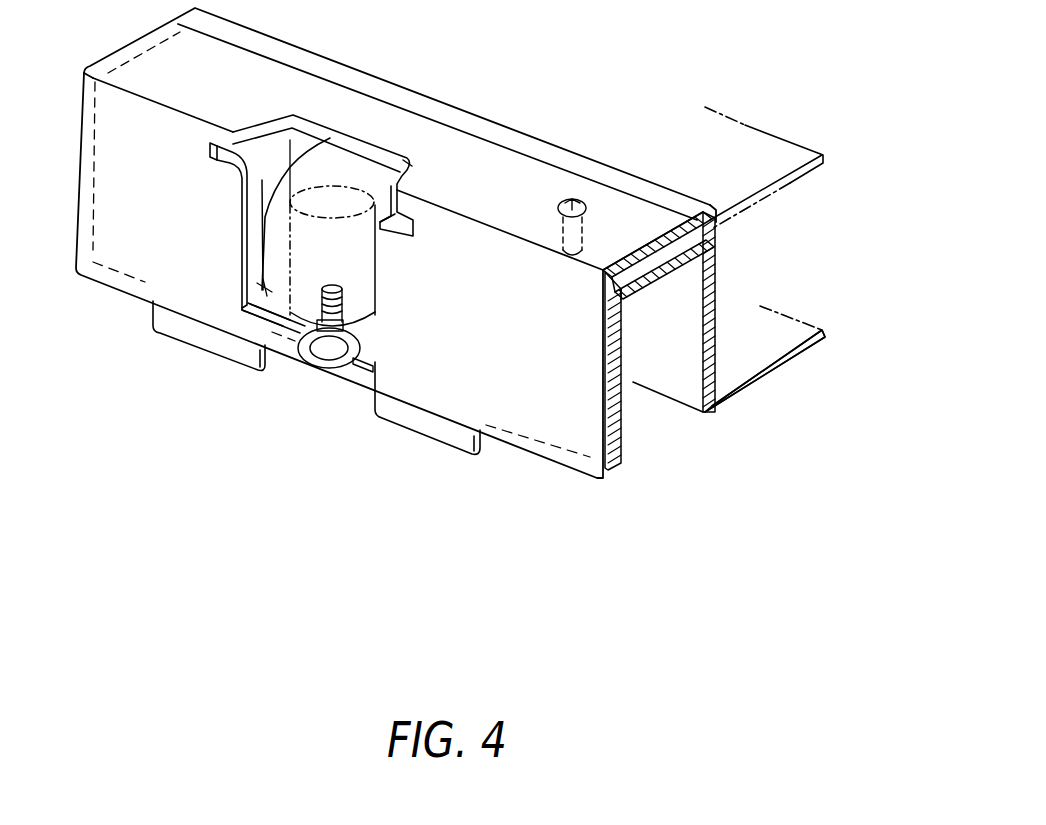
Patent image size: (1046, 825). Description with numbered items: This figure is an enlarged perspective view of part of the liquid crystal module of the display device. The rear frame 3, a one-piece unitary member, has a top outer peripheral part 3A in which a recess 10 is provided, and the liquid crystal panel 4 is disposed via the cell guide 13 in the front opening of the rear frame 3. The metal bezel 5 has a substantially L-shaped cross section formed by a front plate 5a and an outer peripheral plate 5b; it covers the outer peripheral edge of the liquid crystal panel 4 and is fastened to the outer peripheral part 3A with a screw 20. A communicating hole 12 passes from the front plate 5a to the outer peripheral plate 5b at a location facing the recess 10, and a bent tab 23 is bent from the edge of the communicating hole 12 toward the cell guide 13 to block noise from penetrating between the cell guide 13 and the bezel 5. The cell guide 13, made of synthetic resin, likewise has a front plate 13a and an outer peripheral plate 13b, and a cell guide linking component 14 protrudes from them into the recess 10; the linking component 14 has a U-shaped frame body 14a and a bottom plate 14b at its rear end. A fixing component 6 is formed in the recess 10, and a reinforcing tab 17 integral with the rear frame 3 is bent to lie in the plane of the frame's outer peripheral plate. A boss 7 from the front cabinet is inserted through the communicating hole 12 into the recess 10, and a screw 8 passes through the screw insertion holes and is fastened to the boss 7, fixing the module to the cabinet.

The rear frame 3 is at (729, 397).
The outer peripheral part 3A is at (688, 418).
The liquid crystal panel 4 is at (792, 187).
The bezel 5 is at (603, 156).
The front plate 5a is at (638, 230).
The outer peripheral plate 5b is at (517, 444).
The fixing component 6 is at (347, 370).
The boss 7 is at (357, 252).
The screw 8 is at (312, 358).
The recess 10 is at (240, 237).
The communicating hole 12 is at (260, 181).
The cell guide 13 is at (641, 401).
The front plate 13a is at (637, 276).
The outer peripheral plate 13b is at (609, 473).
The cell guide linking component 14 is at (550, 48).
The U-shaped frame body 14a is at (355, 150).
The bottom plate 14b is at (330, 138).
The reinforcing tab 17 is at (203, 337).
The screw 20 is at (560, 203).
The bent tab 23 is at (416, 158).